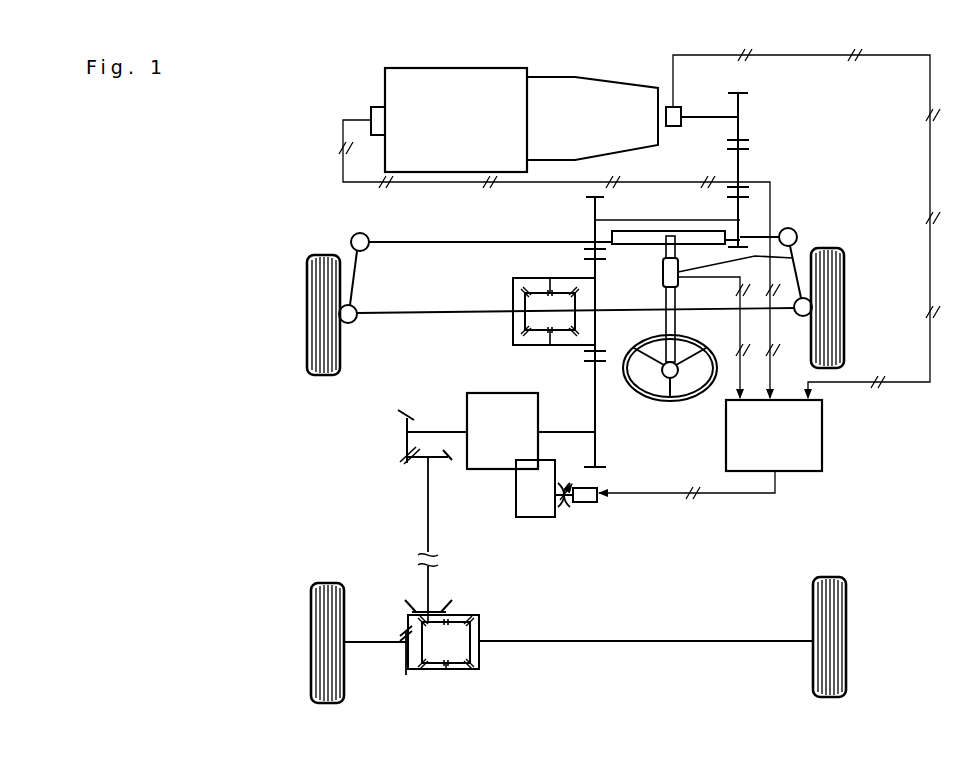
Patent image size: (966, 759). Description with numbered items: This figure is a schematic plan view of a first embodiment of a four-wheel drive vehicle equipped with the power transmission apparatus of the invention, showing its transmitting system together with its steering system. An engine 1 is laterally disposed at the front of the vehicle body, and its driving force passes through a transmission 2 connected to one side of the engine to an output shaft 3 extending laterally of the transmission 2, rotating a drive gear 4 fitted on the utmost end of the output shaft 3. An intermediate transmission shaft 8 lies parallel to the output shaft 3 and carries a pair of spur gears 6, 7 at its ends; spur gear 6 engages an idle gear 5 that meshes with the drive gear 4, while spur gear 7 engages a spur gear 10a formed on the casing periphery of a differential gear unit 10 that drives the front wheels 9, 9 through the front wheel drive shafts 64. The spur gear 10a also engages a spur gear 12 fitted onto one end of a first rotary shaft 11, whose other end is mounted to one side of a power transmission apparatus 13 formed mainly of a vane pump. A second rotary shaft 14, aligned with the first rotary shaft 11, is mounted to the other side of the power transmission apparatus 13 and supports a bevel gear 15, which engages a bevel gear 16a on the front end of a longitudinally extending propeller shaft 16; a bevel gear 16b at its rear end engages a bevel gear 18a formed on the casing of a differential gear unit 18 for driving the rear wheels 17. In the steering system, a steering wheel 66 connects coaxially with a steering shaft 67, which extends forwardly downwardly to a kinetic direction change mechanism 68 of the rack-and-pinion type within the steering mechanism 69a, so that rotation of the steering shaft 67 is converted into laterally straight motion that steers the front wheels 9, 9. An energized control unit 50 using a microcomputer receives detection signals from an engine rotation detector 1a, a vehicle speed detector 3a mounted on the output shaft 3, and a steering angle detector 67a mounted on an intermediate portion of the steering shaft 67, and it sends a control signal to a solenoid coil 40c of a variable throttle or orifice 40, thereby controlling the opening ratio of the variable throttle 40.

The engine 1 is at (451, 76).
The engine rotation detector 1a is at (373, 108).
The transmission 2 is at (601, 86).
The output shaft 3 is at (708, 116).
The vehicle speed detector 3a is at (671, 106).
The drive gear 4 is at (740, 137).
The idle gear 5 is at (740, 172).
The spur gear 6 is at (752, 212).
The spur gear 7 is at (590, 207).
The intermediate transmission shaft 8 is at (684, 228).
The kinetic direction change mechanism 68 is at (654, 230).
The steering mechanism 69a is at (471, 236).
The steering shaft 67 is at (667, 305).
The steering angle detector 67a is at (797, 256).
The steering wheel 66 is at (680, 400).
The front wheels 9 is at (307, 312).
The front wheel drive shafts 64 is at (463, 316).
The differential gear unit 10 is at (509, 300).
The spur gear 10a is at (597, 297).
The first rotary shaft 11 is at (570, 428).
The spur gear 12 is at (602, 396).
The power transmission apparatus 13 is at (493, 472).
The second rotary shaft 14 is at (446, 428).
The bevel gear 15 is at (405, 445).
The propeller shaft 16 is at (428, 540).
The bevel gear 16a is at (409, 462).
The bevel gear 16b is at (420, 608).
The rear wheels 17 is at (300, 632).
The differential gear unit 18 is at (487, 630).
The bevel gear 18a is at (405, 662).
The variable throttle or orifice 40 is at (535, 522).
The solenoid coil 40c is at (592, 504).
The energized control unit 50 is at (794, 451).